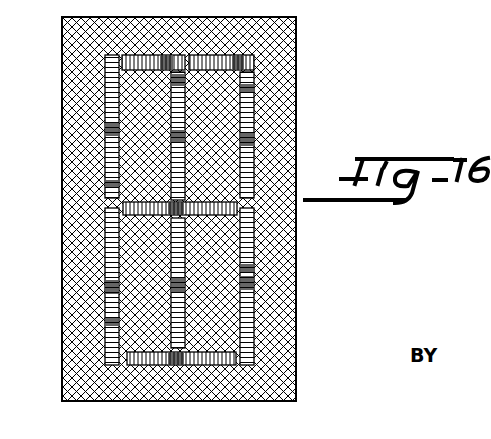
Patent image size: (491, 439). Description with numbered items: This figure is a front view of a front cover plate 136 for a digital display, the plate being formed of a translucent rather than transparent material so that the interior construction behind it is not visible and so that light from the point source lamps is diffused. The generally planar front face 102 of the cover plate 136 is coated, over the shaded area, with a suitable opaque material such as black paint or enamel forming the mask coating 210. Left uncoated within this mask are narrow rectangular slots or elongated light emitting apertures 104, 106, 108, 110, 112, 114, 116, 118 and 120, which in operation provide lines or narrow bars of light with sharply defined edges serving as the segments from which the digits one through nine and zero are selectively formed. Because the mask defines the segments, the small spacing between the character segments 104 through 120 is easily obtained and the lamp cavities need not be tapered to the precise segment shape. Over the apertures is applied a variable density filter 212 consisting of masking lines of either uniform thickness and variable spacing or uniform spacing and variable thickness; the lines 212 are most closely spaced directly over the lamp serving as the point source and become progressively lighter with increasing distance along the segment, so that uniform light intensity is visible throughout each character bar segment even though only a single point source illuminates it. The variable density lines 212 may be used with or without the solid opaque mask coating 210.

The front face 102 is at (185, 265).
The slot 104 is at (213, 64).
The slot 106 is at (172, 55).
The slot 108 is at (109, 99).
The slot 110 is at (107, 249).
The slot 112 is at (140, 360).
The slot 114 is at (252, 314).
The slot 116 is at (254, 137).
The slot 118 is at (138, 215).
The slot 120 is at (176, 156).
The front cover plate 136 is at (62, 79).
The opaque mask coating 210 is at (62, 247).
The variable density filter 212 is at (253, 87).